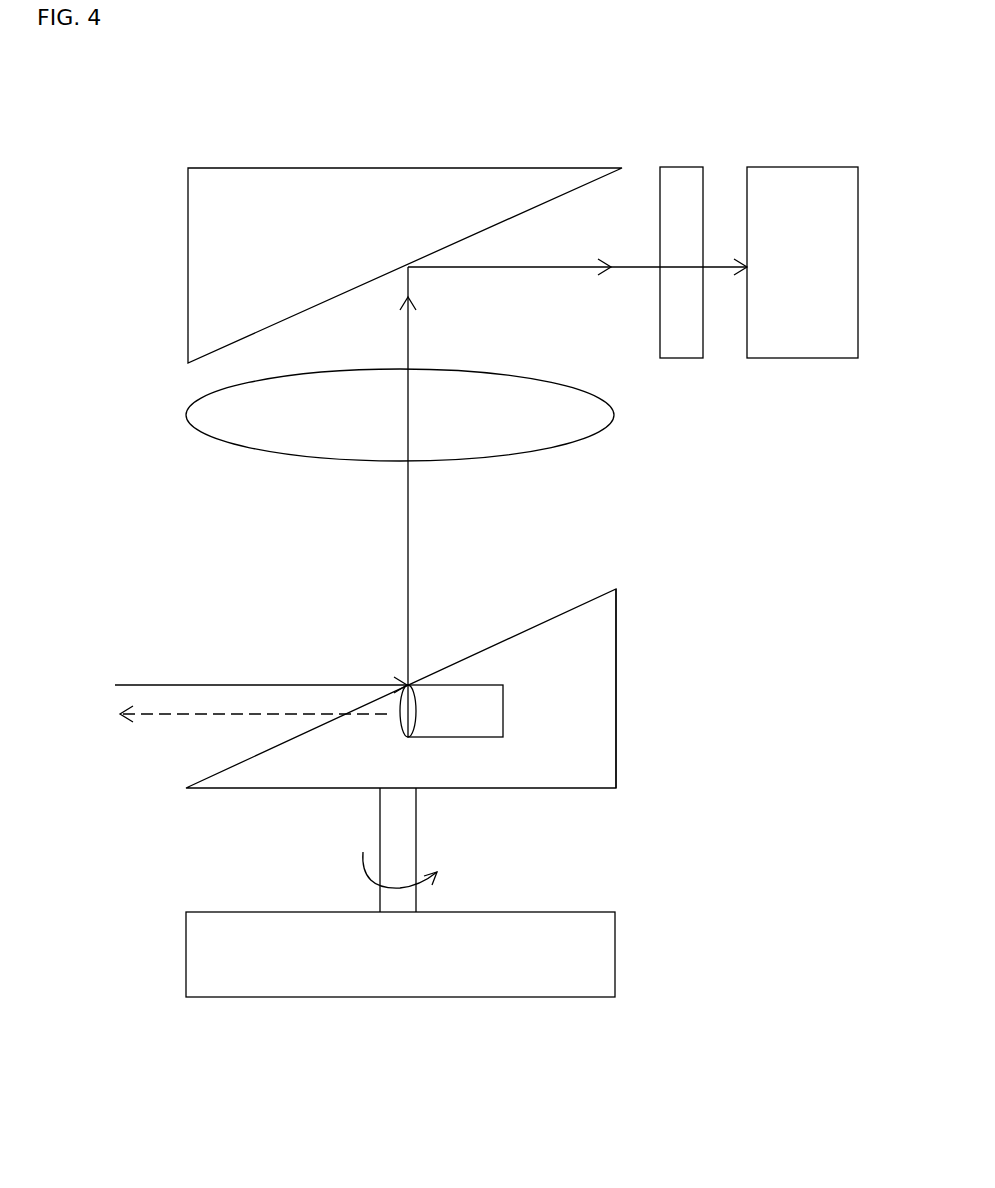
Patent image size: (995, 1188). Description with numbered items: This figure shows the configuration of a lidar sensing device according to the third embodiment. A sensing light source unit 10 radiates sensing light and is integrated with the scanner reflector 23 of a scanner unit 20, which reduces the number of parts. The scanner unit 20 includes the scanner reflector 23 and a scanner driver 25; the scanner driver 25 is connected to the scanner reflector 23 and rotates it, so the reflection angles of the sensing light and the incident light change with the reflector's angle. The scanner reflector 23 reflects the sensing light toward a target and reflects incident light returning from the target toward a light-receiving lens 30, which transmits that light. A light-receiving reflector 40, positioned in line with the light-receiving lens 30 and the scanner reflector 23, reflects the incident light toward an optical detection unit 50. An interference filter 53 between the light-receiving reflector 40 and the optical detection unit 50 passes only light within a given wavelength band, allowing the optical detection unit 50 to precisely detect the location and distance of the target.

The sensing light source unit 10 is at (468, 685).
The scanner unit 20 is at (616, 687).
The scanner reflector 23 is at (616, 748).
The scanner driver 25 is at (615, 943).
The light-receiving lens 30 is at (207, 395).
The light-receiving reflector 40 is at (513, 167).
The optical detection unit 50 is at (815, 167).
The interference filter 53 is at (683, 167).